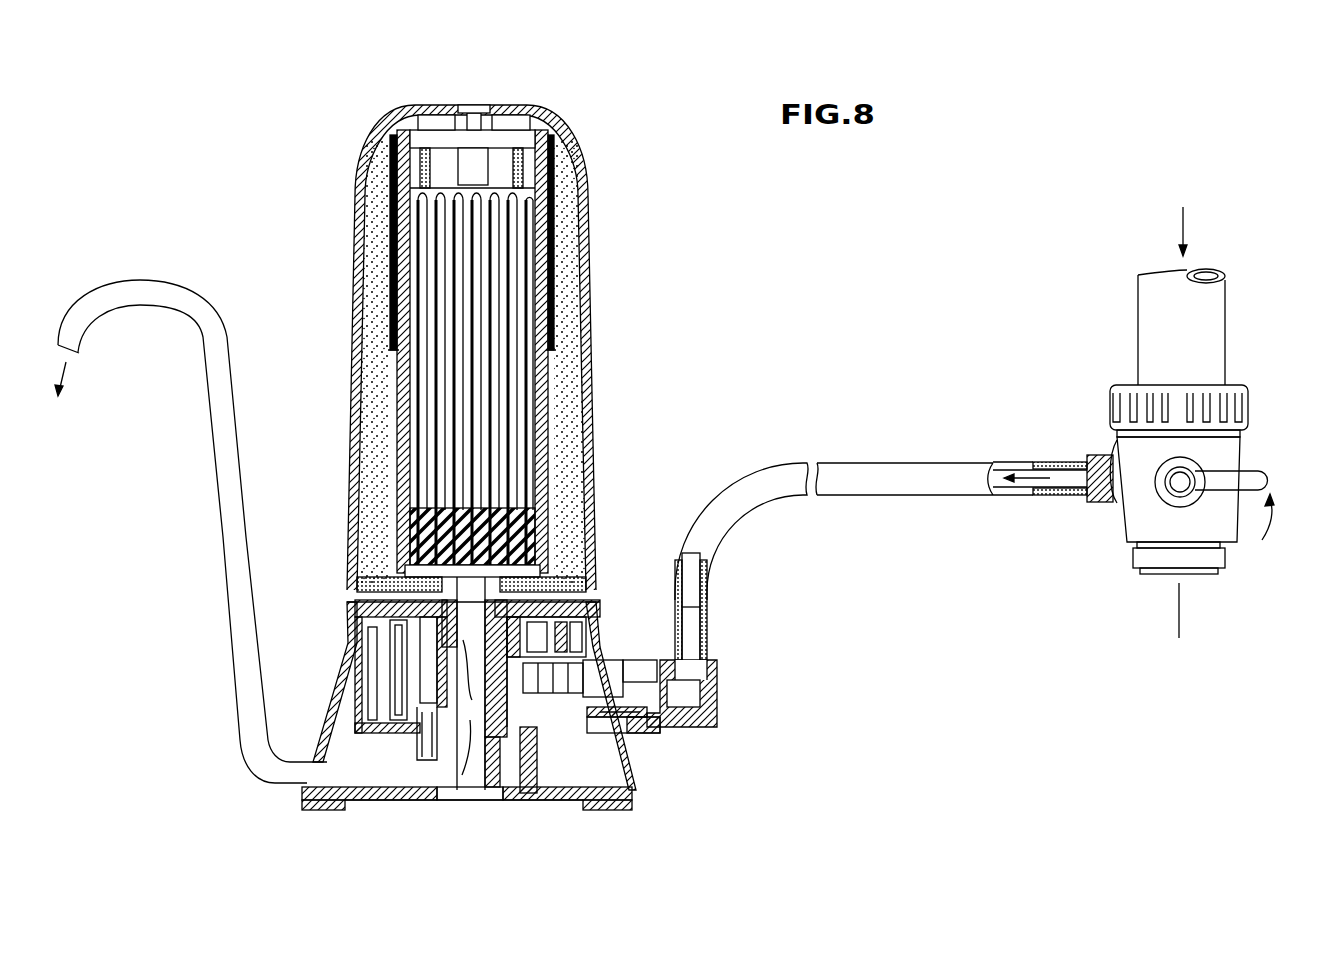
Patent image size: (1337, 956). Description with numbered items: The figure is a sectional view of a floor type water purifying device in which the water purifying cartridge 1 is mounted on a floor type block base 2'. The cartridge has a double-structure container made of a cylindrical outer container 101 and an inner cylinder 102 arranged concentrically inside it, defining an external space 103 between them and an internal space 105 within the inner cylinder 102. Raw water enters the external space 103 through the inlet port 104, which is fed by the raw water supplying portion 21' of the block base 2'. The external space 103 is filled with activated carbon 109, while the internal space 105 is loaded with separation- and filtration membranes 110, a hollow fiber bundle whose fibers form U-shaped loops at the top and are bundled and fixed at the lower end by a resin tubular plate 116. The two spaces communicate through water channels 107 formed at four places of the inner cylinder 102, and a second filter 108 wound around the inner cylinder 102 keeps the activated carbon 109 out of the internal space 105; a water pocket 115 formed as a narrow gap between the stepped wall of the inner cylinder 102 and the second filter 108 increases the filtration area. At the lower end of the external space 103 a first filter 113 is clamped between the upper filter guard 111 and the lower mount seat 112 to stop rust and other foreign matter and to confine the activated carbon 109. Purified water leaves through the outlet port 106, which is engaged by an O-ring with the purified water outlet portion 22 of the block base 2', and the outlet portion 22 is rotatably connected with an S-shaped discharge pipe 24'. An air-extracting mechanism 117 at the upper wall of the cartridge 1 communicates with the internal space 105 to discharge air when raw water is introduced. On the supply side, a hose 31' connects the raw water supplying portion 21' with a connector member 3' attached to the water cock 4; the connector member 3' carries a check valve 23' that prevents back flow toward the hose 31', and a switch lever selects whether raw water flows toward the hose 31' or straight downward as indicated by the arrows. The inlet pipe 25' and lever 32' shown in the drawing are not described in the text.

The water purifying cartridge 1 is at (366, 116).
The block base 2' is at (453, 697).
The connector member 3' is at (1205, 511).
The water cock 4 is at (1208, 338).
The raw water supplying portion 21' is at (713, 693).
The purified water outlet portion 22 is at (472, 762).
The check valve 23' is at (642, 740).
The S-shaped discharge pipe 24' is at (191, 531).
The inlet pipe 25' is at (615, 625).
The hose 31' is at (881, 508).
The valve lever 32' is at (1264, 499).
The outer container 101 is at (358, 224).
The inner cylinder 102 is at (375, 385).
The external space 103 is at (372, 279).
The inlet port 104 is at (588, 614).
The internal space 105 is at (462, 420).
The outlet port 106 is at (503, 762).
The water channels 107 is at (488, 165).
The second filter 108 is at (565, 255).
The activated carbon 109 is at (560, 384).
The separation- and filtration membranes 110 is at (505, 410).
The filter guard 111 is at (368, 585).
The mount seat 112 is at (368, 604).
The first filter 113 is at (358, 560).
The water pocket 115 is at (553, 221).
The tubular plate 116 is at (537, 527).
The air-extracting mechanism 117 is at (474, 106).